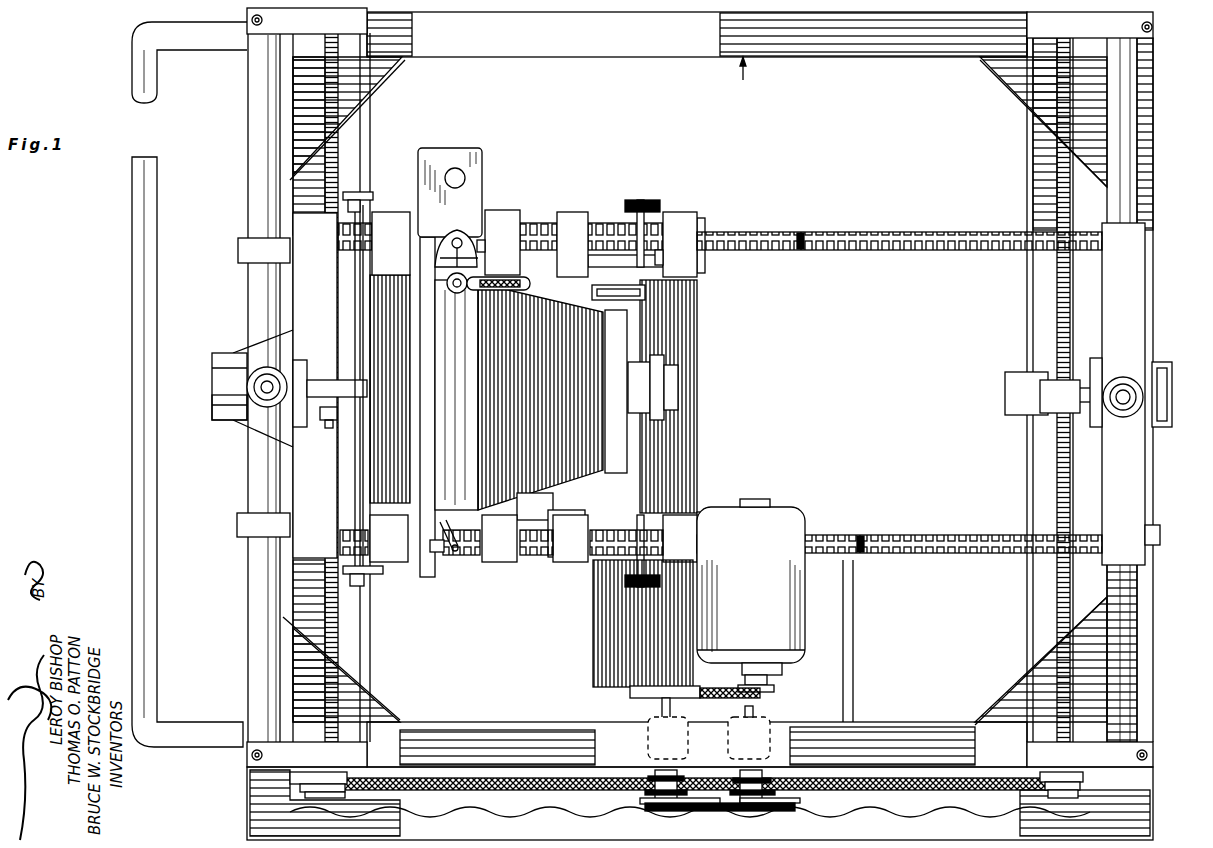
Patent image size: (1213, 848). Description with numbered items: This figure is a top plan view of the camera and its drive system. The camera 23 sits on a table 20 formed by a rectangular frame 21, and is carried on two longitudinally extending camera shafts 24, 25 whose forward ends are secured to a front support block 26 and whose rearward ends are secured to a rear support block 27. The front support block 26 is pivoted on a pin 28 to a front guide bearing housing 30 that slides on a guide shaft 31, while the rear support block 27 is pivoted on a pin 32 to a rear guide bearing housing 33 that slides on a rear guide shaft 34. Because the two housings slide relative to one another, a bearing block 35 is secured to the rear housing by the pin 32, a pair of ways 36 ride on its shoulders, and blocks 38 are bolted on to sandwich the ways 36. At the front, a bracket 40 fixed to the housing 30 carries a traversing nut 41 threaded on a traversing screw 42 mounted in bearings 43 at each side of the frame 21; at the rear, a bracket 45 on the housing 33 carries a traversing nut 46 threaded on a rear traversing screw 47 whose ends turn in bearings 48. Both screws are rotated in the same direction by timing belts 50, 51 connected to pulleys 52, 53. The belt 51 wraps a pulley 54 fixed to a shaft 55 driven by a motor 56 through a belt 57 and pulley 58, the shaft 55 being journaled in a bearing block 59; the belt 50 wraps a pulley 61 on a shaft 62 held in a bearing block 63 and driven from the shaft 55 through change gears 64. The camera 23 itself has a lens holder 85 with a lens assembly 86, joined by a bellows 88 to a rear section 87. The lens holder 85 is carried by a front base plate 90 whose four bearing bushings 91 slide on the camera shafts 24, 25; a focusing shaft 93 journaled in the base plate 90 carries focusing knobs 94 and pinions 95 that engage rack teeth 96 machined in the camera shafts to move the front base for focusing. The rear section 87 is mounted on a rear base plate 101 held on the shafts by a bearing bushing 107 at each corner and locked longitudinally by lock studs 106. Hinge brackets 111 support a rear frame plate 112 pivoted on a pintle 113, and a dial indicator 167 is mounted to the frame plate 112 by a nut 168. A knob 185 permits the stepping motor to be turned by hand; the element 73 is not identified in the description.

The table 20 is at (734, 78).
The rectangular frame 21 is at (697, 34).
The camera 23 is at (622, 340).
The camera shaft 24 is at (910, 536).
The camera shaft 25 is at (852, 232).
The front support block 26 is at (1140, 300).
The rear support block 27 is at (300, 303).
The pin 28 is at (1123, 418).
The front guide bearing housing 30 is at (1160, 532).
The guide shaft 31 is at (1140, 600).
The pin 32 is at (262, 400).
The rear guide bearing housing 33 is at (245, 530).
The rear guide shaft 34 is at (262, 588).
The bearing block 35 is at (220, 400).
The ways 36 is at (233, 352).
The blocks 38 is at (285, 358).
The bracket 40 is at (1030, 410).
The traversing nut 41 is at (1055, 378).
The traversing screw 42 is at (1072, 472).
The bearings 43 is at (1090, 389).
The bracket 45 is at (340, 387).
The traversing nut 46 is at (325, 418).
The rear traversing screw 47 is at (330, 428).
The bearings 48 is at (307, 387).
The timing belt 50 is at (905, 790).
The timing belt 51 is at (492, 790).
The pulley 52 is at (1045, 792).
The pulley 53 is at (347, 787).
The pulley 54 is at (680, 780).
The shaft 55 is at (664, 724).
The motor 56 is at (751, 581).
The belt 57 is at (774, 690).
The pulley 58 is at (630, 692).
The bearing block 59 is at (648, 748).
The pulley 61 is at (770, 780).
The shaft 62 is at (778, 800).
The bearing block 63 is at (772, 740).
The change gears 64 is at (650, 815).
The support 73 is at (852, 693).
The lens holder 85 is at (615, 473).
The lens assembly 86 is at (672, 388).
The rear section 87 is at (457, 238).
The bellows 88 is at (545, 492).
The front base plate 90 is at (690, 456).
The bearing bushings 91 is at (582, 212).
The focusing shaft 93 is at (662, 260).
The focusing knobs 94 is at (645, 203).
The pinion 95 is at (680, 387).
The rack teeth 96 is at (800, 250).
The rear base plate 101 is at (380, 300).
The lock studs 106 is at (365, 195).
The bearing bushing 107 is at (408, 212).
The hinge brackets 111 is at (478, 258).
The rear frame plate 112 is at (422, 472).
The pintle 113 is at (482, 248).
The dial indicator 167 is at (436, 552).
The nut 168 is at (448, 552).
The knob 185 is at (465, 178).